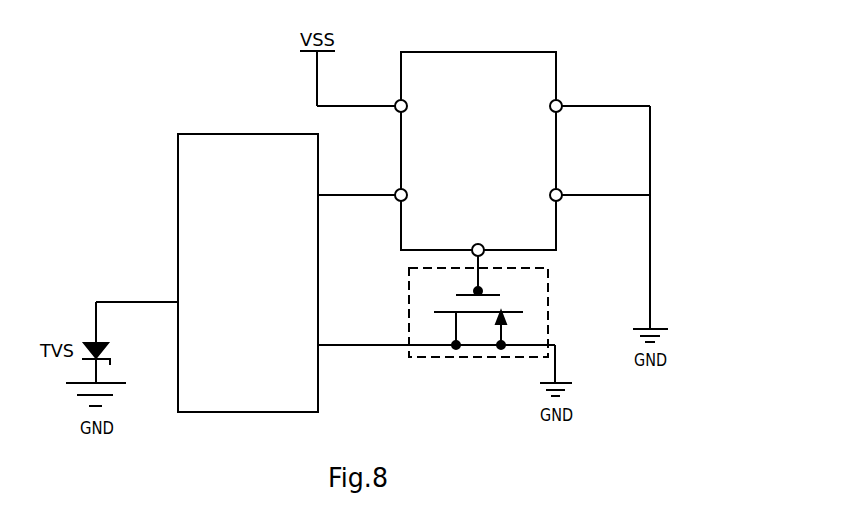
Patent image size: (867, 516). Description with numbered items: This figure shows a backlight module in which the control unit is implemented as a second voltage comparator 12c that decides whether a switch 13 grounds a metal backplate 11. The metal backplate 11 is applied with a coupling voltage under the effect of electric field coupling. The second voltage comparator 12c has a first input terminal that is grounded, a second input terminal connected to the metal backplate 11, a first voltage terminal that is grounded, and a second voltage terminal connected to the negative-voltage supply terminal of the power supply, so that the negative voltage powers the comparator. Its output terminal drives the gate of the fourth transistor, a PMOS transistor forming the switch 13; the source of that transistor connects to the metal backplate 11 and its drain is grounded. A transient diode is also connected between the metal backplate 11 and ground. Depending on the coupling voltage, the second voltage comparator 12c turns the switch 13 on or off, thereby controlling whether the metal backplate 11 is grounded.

The metal backplate 11 is at (248, 273).
The second voltage comparator 12c is at (483, 62).
The switch 13 is at (432, 357).